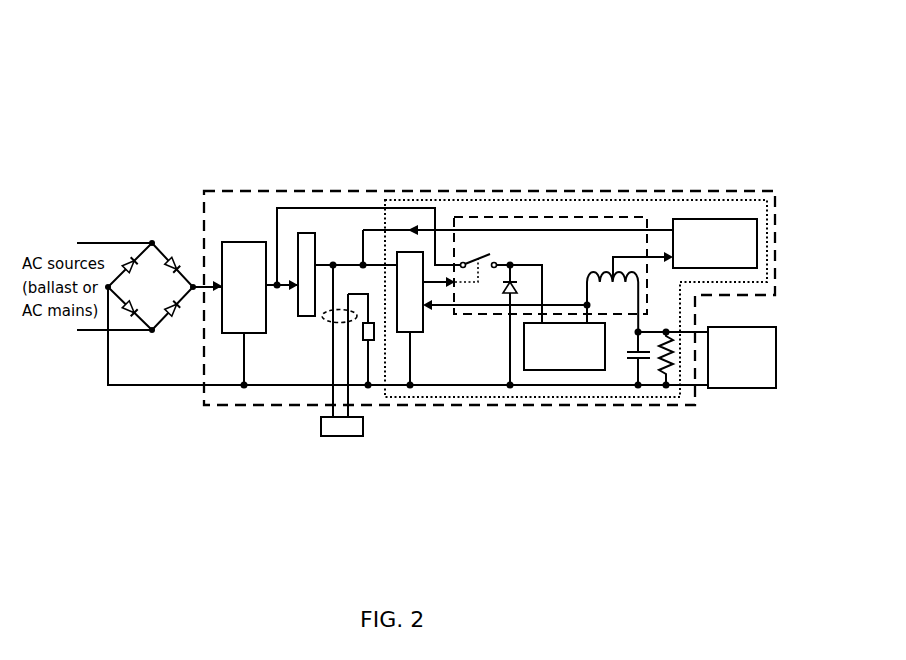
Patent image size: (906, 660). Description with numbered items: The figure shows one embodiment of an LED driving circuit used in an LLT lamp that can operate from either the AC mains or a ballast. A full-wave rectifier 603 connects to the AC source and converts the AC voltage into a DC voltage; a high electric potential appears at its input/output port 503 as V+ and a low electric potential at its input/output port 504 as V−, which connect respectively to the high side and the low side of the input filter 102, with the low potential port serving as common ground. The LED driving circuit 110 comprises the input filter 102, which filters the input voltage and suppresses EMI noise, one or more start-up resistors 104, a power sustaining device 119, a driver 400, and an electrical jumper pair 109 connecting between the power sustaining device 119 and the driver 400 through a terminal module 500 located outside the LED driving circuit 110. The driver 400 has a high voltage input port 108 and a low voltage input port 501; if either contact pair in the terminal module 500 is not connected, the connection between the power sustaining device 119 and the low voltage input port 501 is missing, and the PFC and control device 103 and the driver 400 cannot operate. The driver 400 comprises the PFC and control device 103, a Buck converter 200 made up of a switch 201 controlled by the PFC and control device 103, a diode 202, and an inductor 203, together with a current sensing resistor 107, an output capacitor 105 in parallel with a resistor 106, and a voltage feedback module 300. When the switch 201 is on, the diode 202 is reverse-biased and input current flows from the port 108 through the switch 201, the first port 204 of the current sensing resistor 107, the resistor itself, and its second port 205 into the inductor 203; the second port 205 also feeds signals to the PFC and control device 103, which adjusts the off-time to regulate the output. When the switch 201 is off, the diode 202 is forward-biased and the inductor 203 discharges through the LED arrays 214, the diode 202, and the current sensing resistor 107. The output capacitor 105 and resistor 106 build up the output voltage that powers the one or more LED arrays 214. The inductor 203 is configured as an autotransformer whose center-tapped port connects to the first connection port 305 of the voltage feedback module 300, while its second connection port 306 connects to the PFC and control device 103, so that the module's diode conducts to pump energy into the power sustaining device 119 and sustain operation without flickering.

The full-wave rectifier 603 is at (120, 246).
The input/output port 504 is at (109, 289).
The input/output port 503 is at (193, 285).
The LED driving circuit 110 is at (425, 180).
The Buck converter 200 is at (524, 207).
The driver 400 is at (448, 190).
The input filter 102 is at (242, 241).
The high voltage input port 108 is at (276, 283).
The start-up resistors 104 is at (299, 318).
The electrical jumper pair 109 is at (342, 309).
The terminal module 500 is at (340, 437).
The power sustaining device 119 is at (372, 341).
The low voltage input port 501 is at (364, 262).
The second connection port 306 is at (637, 228).
The PFC and control device 103 is at (411, 334).
The switch 201 is at (471, 268).
The first port 204 is at (509, 262).
The diode 202 is at (508, 297).
The second port 205 is at (586, 302).
The inductor 203 is at (600, 271).
The first connection port 305 is at (658, 255).
The voltage feedback module 300 is at (723, 218).
The current sensing resistor 107 is at (567, 371).
The output capacitor 105 is at (632, 362).
The resistor 106 is at (668, 372).
The LED arrays 214 is at (735, 389).